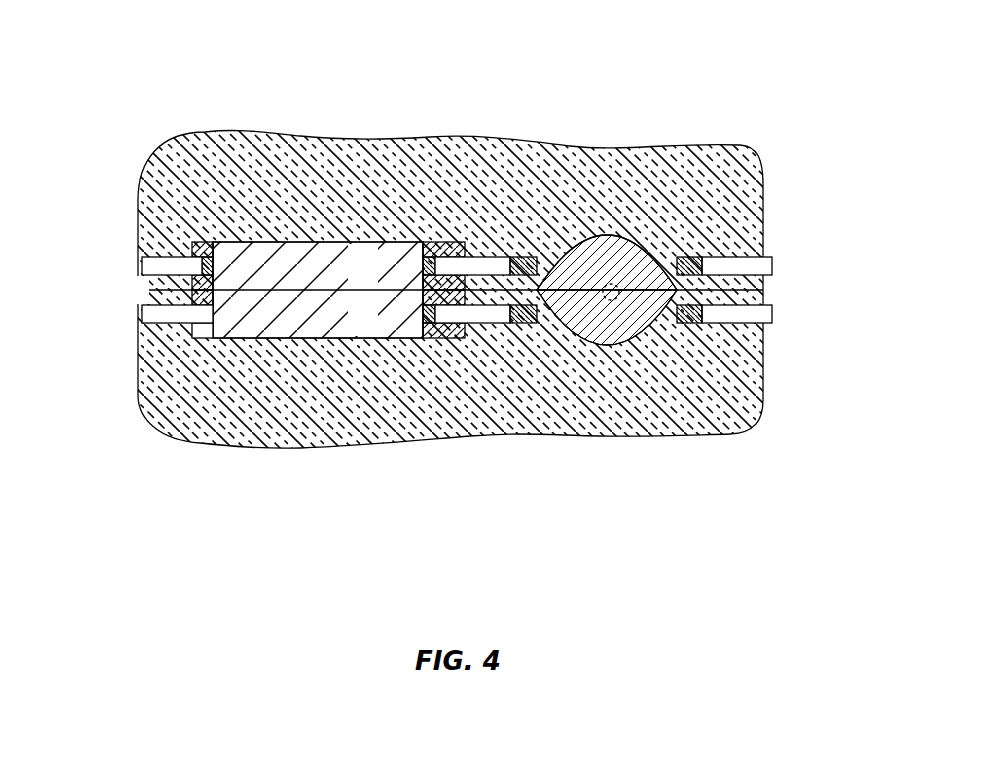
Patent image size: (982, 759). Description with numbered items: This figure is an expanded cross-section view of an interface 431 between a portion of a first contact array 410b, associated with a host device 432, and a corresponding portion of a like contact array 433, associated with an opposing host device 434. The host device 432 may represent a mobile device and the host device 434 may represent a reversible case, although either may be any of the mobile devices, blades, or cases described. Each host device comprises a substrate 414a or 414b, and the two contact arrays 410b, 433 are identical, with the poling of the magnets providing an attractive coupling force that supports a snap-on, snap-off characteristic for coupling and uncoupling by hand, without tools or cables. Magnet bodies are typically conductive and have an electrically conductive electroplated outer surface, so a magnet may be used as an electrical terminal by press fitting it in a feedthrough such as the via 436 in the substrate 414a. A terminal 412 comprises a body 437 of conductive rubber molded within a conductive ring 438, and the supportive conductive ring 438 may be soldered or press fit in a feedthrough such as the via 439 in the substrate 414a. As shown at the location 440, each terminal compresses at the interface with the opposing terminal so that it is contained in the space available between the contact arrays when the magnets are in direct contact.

The contact array 410b is at (779, 71).
The terminal 412 is at (625, 257).
The substrate 414a is at (145, 267).
The substrate 414b is at (150, 313).
The interface 431 is at (133, 290).
The host device 432 is at (175, 167).
The contact array 433 is at (748, 467).
The host device 434 is at (183, 410).
The via 436 is at (213, 242).
The body 437 is at (568, 272).
The conductive ring 438 is at (690, 257).
The via 439 is at (694, 262).
The location 440 is at (620, 298).